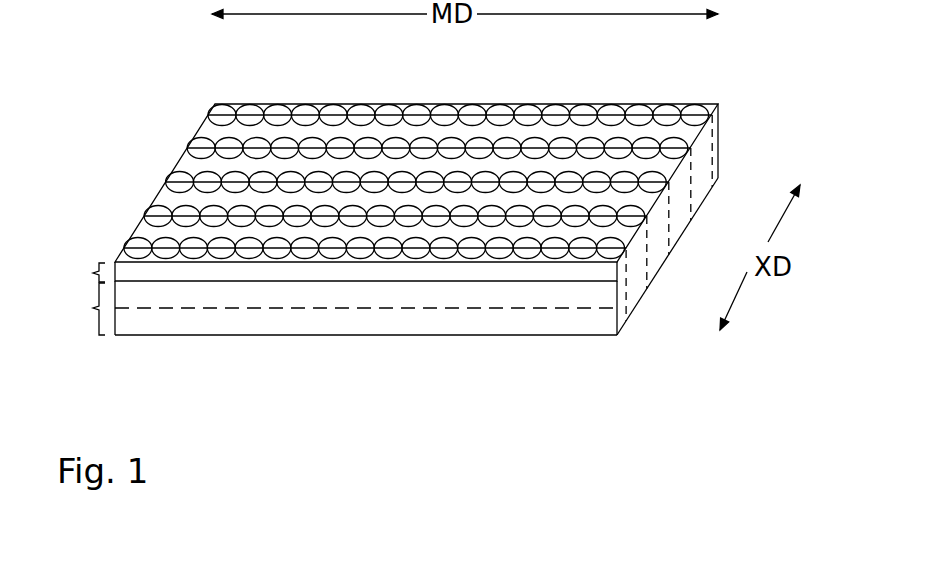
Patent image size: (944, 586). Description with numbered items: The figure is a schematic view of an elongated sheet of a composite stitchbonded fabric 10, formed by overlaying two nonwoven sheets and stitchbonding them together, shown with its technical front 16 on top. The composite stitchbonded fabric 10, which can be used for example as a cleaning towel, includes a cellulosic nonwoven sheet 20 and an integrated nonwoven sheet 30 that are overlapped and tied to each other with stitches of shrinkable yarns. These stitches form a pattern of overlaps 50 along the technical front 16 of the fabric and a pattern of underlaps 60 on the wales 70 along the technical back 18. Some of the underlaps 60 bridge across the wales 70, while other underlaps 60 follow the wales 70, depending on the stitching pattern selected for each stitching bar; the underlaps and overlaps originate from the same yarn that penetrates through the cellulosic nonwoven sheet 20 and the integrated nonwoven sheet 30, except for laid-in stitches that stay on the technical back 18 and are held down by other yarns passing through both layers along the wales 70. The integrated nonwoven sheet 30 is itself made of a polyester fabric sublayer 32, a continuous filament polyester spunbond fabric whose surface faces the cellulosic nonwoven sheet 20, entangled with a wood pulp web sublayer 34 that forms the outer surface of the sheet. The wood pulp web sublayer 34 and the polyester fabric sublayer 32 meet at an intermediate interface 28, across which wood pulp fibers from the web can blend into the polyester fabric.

The composite stitchbonded fabric 10 is at (196, 72).
The technical front 16 is at (410, 80).
The technical back 18 is at (400, 356).
The cellulosic nonwoven sheet 20 is at (93, 273).
The intermediate interface 28 is at (468, 308).
The integrated nonwoven sheet 30 is at (93, 308).
The polyester fabric sublayer 32 is at (580, 290).
The wood pulp web sublayer 34 is at (535, 325).
The overlaps 50 is at (620, 178).
The underlaps 60 is at (667, 257).
The wales 70 is at (187, 148).